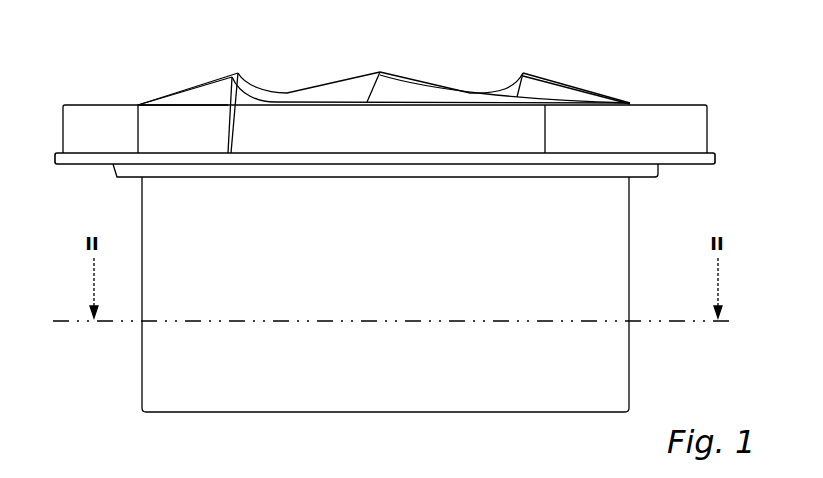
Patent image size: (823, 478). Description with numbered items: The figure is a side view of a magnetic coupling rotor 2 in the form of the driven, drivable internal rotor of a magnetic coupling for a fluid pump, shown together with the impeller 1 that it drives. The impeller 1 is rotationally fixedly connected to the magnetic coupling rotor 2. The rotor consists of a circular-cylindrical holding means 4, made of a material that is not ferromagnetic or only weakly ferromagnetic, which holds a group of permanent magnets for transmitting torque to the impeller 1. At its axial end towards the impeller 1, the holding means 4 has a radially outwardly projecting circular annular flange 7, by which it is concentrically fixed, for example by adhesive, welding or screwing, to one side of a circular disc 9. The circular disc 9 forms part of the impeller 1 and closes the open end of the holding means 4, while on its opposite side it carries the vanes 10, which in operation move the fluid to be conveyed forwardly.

The impeller 1 is at (633, 118).
The magnetic coupling rotor 2 is at (353, 297).
The circular-cylindrical holding means 4 is at (592, 348).
The circular annular flange 7 is at (653, 178).
The circular disc 9 is at (102, 160).
The vanes 10 is at (223, 90).